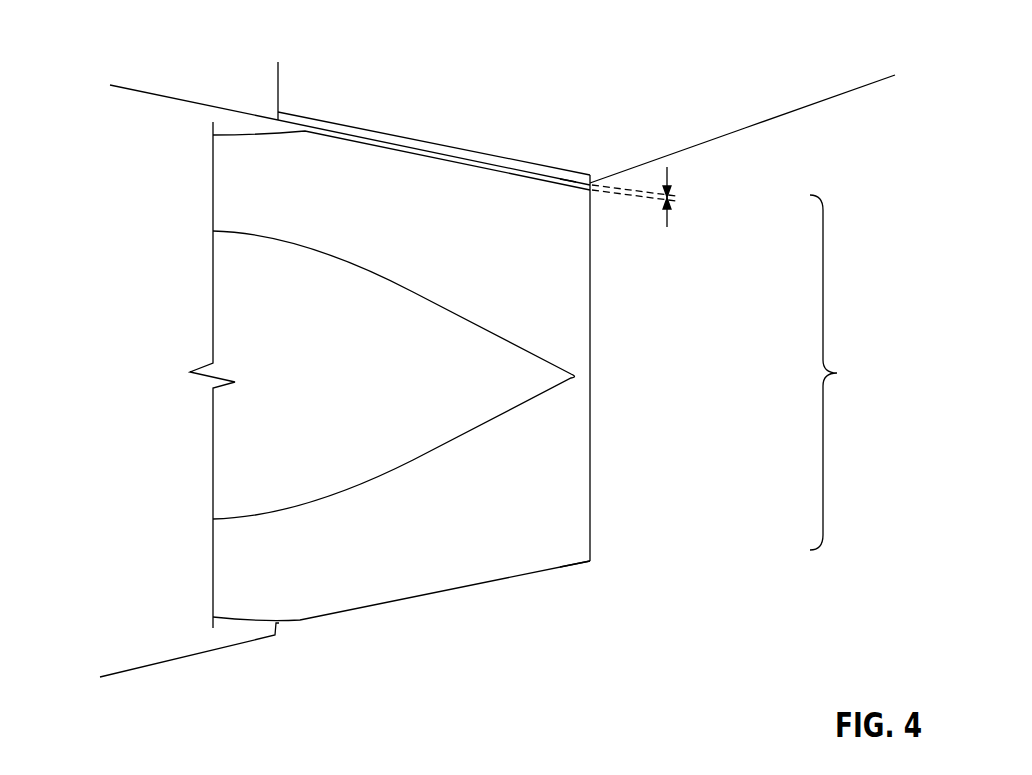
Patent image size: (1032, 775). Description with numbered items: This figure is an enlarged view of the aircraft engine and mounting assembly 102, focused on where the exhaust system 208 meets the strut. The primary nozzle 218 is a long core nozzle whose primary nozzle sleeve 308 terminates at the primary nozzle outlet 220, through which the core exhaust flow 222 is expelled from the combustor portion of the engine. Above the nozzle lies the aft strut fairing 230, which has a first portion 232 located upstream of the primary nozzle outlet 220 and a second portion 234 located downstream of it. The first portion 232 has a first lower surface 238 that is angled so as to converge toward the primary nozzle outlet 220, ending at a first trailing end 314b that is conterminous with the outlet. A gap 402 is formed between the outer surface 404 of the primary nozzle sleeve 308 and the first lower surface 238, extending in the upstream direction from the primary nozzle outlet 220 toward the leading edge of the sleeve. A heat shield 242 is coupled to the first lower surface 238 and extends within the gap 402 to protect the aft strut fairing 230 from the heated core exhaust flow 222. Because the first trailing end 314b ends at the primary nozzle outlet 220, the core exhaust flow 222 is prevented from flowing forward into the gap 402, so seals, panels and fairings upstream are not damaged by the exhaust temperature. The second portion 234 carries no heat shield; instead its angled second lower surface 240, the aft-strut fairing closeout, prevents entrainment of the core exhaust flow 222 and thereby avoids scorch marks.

The aircraft engine and mounting assembly 102 is at (472, 58).
The aft strut fairing 230 is at (393, 78).
The first portion 232 is at (275, 82).
The heat shield 242 is at (407, 142).
The first lower surface 238 is at (497, 157).
The first trailing end 314b is at (592, 183).
The second portion 234 is at (745, 127).
The second lower surface 240 is at (797, 111).
The gap 402 is at (663, 223).
The outer surface 404 is at (566, 187).
The primary nozzle outlet 220 is at (592, 292).
The core exhaust flow 222 is at (851, 372).
The primary nozzle sleeve 308 is at (395, 602).
The exhaust system 208 is at (612, 573).
The primary nozzle 218 is at (435, 667).